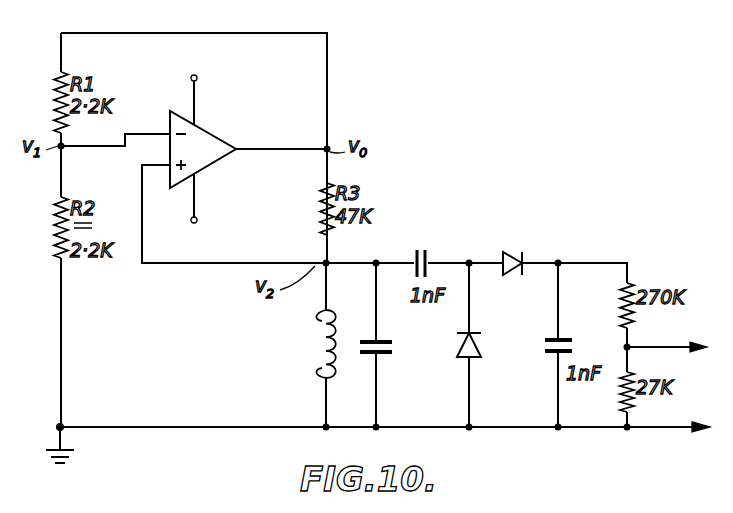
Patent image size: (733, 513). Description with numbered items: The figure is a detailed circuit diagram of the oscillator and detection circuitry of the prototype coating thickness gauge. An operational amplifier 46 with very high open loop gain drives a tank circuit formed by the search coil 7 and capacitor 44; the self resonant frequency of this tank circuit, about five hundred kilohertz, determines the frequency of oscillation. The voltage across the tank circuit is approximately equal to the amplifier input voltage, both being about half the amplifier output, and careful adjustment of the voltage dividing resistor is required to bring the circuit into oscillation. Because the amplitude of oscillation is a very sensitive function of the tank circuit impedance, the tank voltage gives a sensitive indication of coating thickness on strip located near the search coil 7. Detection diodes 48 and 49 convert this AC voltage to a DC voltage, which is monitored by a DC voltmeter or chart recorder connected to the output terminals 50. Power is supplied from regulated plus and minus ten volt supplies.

The operational amplifier 46 is at (218, 143).
The search coil 7 is at (318, 380).
The capacitor 44 is at (371, 357).
The detection diode 49 is at (462, 360).
The detection diode 48 is at (508, 257).
The output terminals 50 is at (695, 344).